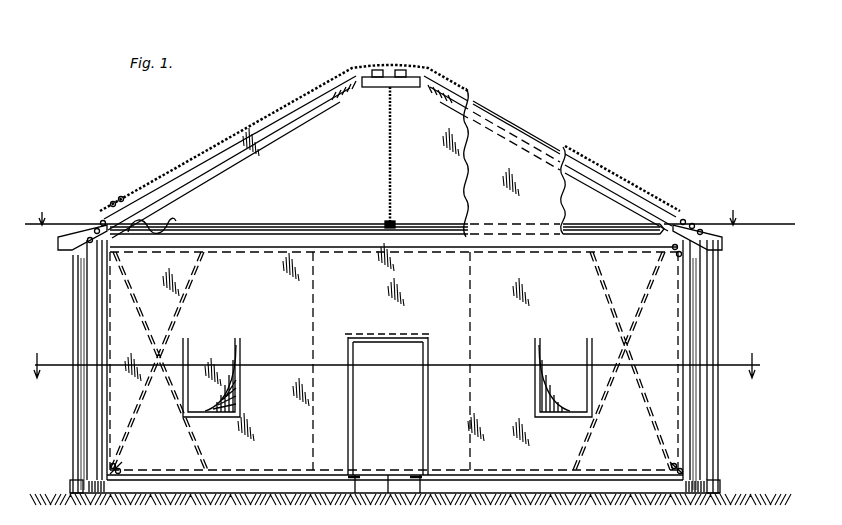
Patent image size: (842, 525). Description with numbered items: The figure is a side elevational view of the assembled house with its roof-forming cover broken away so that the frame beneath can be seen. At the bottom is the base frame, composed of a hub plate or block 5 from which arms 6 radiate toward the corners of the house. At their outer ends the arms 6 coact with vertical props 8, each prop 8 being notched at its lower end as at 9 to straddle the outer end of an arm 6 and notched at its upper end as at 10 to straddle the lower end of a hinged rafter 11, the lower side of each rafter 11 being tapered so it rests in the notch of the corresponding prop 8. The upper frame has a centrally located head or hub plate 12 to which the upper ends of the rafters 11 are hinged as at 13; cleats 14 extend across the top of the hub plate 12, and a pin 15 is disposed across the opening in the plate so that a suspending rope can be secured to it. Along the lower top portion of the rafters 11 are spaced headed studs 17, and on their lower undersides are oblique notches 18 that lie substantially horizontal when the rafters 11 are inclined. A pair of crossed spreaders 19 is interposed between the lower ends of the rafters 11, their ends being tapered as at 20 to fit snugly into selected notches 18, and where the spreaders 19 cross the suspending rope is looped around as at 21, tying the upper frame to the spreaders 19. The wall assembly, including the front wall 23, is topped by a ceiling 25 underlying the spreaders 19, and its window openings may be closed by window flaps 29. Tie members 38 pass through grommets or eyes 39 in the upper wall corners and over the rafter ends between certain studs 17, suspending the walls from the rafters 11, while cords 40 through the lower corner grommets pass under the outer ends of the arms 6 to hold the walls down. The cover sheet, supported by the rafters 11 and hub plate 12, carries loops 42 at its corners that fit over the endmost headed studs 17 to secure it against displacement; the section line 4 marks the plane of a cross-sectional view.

The section line 4- 4 is at (395, 357).
The hub plate or block 5 is at (363, 504).
The arms 6 is at (305, 482).
The vertical props 8 is at (696, 425).
The notches 9 is at (712, 475).
The notches 10 is at (706, 252).
The hinged rafters 11 is at (213, 156).
The head or hub plate 12 is at (374, 90).
The hinge 13 is at (361, 65).
The cleats 14 is at (404, 70).
The pin 15 is at (387, 178).
The headed studs 17 is at (66, 243).
The notches 18 is at (167, 218).
The crossed spreaders 19 is at (314, 232).
The tapered or bevelled ends 20 is at (127, 198).
The loop 21 is at (396, 227).
The front wall 23 is at (667, 330).
The top wall or ceiling 25 is at (240, 247).
The window flaps 29 is at (216, 379).
The tie members 38 is at (685, 219).
The grommets or eyes 39 is at (673, 254).
The tie members or cords 40 is at (120, 470).
The loops 42 is at (92, 222).